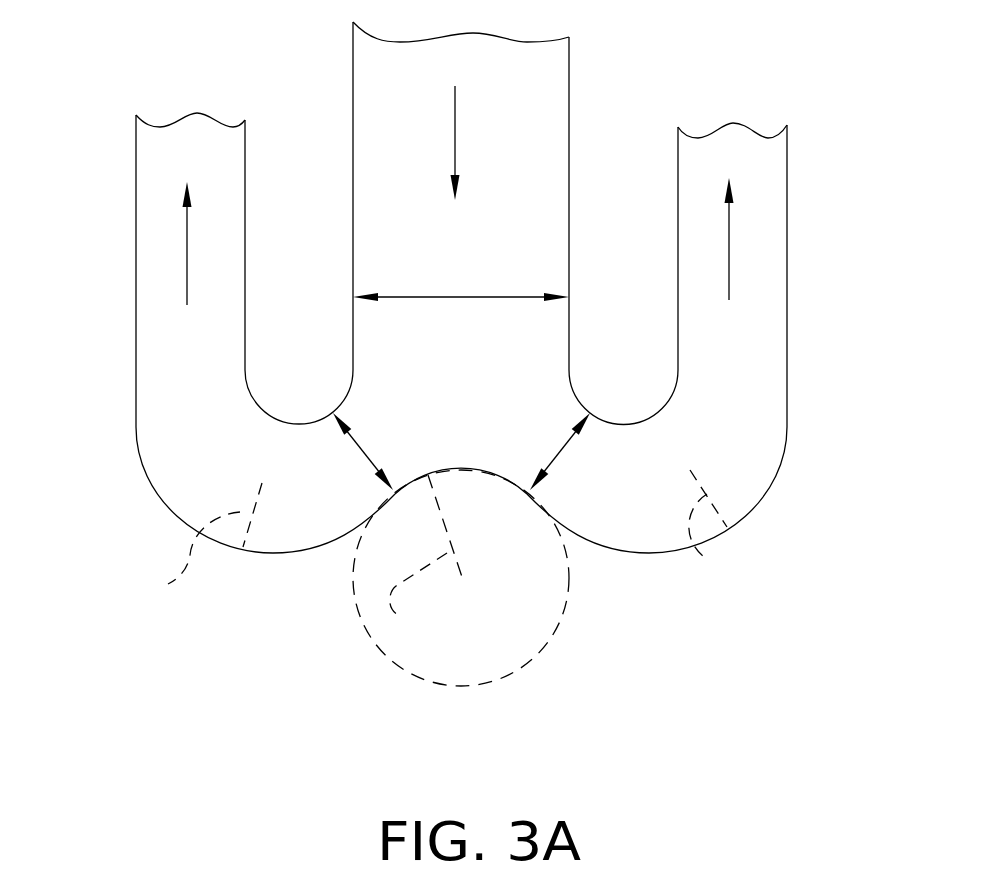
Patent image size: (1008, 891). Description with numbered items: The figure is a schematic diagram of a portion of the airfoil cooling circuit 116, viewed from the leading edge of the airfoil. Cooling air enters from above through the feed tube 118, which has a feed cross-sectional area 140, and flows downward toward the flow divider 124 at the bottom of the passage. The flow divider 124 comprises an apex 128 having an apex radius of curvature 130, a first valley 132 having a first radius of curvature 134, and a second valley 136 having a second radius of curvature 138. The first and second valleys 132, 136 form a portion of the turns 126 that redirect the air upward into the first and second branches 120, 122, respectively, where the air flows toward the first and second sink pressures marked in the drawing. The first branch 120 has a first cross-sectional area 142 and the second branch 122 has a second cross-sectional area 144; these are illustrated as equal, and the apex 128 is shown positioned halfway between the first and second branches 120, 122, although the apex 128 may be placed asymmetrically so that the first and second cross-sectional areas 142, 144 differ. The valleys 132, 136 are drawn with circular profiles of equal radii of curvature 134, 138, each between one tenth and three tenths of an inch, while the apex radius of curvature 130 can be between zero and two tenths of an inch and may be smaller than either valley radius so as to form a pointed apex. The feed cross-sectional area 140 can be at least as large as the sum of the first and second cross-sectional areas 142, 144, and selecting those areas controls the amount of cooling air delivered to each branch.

The airfoil cooling circuit 116 is at (148, 38).
The feed tube 118 is at (530, 122).
The first branch 120 is at (162, 398).
The second branch 122 is at (737, 402).
The flow divider 124 is at (501, 509).
The turns 126 is at (250, 418).
The apex 128 is at (447, 468).
The apex radius of curvature 130 is at (408, 617).
The first valley 132 is at (178, 512).
The first radius of curvature 134 is at (165, 584).
The second valley 136 is at (748, 510).
The second radius of curvature 138 is at (712, 556).
The feed cross-sectional area 140 is at (470, 295).
The first cross-sectional area 142 is at (360, 445).
The second cross-sectional area 144 is at (557, 448).